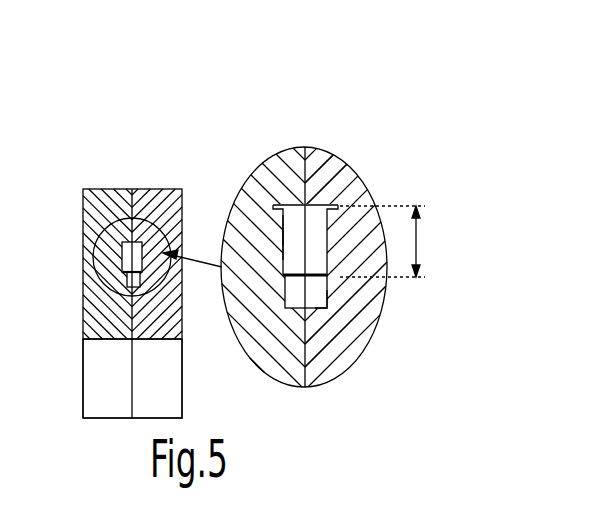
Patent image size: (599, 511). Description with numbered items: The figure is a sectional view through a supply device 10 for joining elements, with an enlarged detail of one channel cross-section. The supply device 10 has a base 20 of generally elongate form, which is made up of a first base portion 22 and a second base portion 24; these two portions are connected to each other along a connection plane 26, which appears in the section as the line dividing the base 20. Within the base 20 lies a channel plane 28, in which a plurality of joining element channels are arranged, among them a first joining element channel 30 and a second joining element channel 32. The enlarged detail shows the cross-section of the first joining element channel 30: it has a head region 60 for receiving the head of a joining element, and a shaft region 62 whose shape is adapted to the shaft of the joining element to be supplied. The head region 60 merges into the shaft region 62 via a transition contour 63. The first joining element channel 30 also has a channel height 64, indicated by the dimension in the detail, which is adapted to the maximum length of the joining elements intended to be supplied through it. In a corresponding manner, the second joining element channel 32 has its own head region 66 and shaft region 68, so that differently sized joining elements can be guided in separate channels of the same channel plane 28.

The supply device 10 is at (337, 207).
The base 20 is at (131, 266).
The first base portion 22 is at (102, 300).
The second base portion 24 is at (165, 318).
The connection plane 26 is at (132, 369).
The channel plane 28 is at (360, 367).
The first joining element channel 30 is at (318, 228).
The second joining element channel 32 is at (325, 295).
The head region 60 is at (283, 207).
The shaft region 62 is at (282, 238).
The transition contour 63 is at (360, 170).
The channel height 64 is at (418, 238).
The head region 66 is at (272, 240).
The shaft region 68 is at (370, 337).